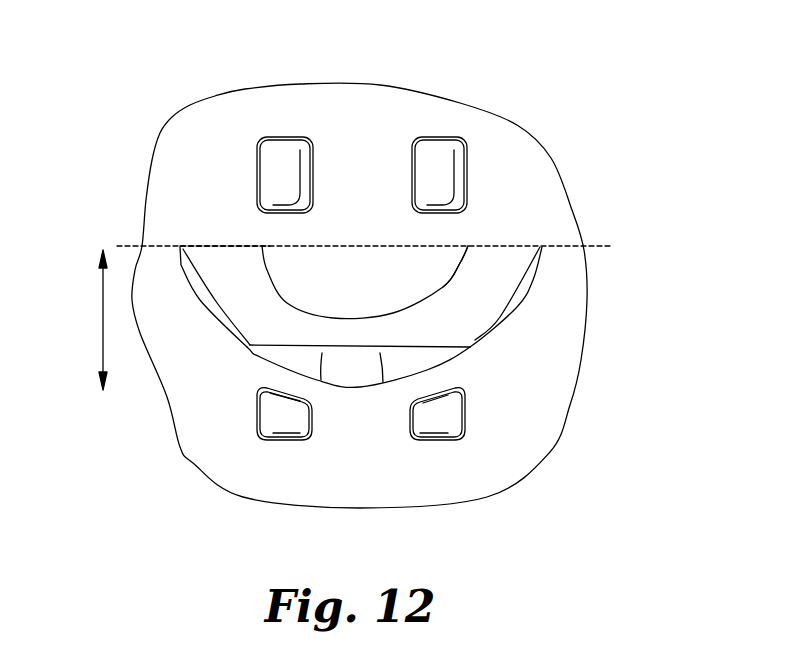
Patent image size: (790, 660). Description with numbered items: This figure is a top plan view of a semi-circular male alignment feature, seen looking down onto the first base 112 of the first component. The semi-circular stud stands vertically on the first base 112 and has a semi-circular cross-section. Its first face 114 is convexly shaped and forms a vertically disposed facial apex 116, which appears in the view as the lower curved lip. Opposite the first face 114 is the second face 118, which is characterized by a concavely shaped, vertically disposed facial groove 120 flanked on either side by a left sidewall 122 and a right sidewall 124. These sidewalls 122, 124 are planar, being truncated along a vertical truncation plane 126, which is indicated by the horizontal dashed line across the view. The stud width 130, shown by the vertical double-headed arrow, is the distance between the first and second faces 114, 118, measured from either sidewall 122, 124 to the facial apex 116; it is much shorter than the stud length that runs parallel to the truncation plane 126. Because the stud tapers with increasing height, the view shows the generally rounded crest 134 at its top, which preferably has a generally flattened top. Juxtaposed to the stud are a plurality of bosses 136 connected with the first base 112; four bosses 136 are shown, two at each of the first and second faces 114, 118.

The first base 112 is at (537, 417).
The first face 114 is at (238, 345).
The facial apex 116 is at (352, 390).
The second face 118 is at (462, 262).
The facial groove 120 is at (362, 317).
The left sidewall 122 is at (497, 245).
The right sidewall 124 is at (227, 246).
The truncation plane 126 is at (130, 245).
The stud width 130 is at (103, 323).
The rounded crest 134 is at (486, 332).
The bosses 136 is at (285, 137).